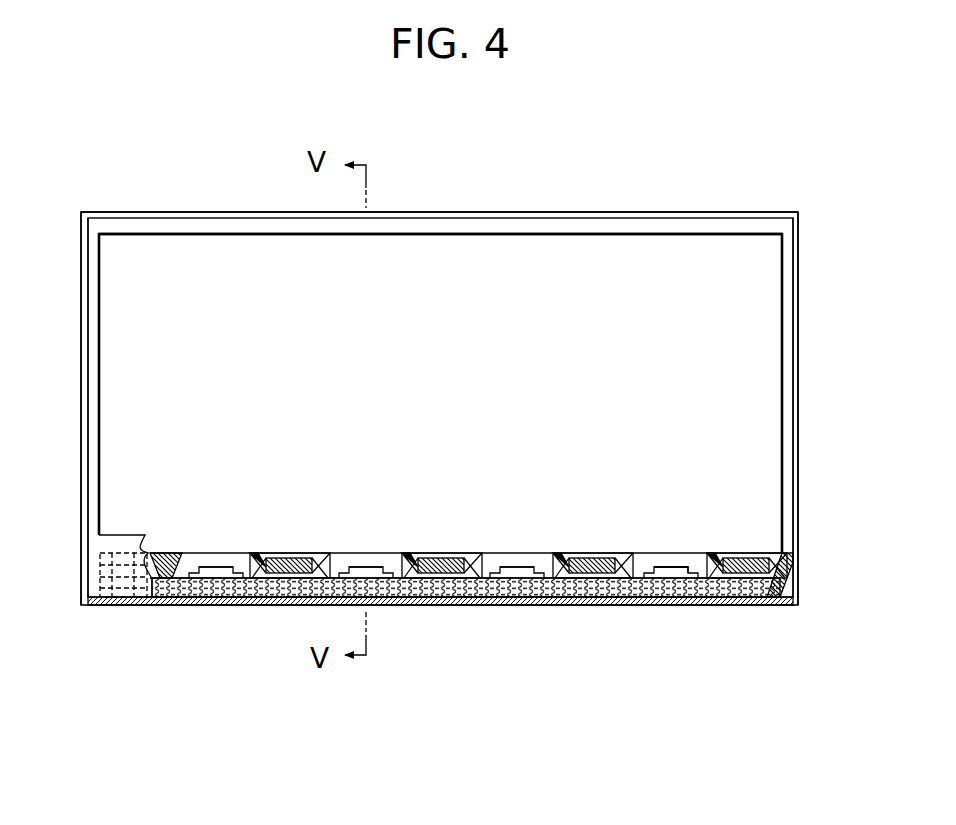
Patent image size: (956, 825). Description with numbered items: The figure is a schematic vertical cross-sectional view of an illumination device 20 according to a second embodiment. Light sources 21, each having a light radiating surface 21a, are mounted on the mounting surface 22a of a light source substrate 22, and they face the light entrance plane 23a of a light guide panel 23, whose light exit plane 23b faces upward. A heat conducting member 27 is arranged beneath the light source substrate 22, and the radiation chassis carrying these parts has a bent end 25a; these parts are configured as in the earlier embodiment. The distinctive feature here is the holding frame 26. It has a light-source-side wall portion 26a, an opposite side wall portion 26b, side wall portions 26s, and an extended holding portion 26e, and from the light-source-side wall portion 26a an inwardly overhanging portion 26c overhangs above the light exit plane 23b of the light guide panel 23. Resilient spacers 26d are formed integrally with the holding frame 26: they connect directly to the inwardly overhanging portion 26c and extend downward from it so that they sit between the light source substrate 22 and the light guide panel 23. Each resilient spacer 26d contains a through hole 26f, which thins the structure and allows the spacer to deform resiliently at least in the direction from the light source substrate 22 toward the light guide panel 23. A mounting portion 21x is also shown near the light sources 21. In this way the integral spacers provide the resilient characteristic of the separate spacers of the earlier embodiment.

The illumination device 20 is at (284, 120).
The light source 21 is at (205, 600).
The light radiating surface 21a is at (517, 566).
The mounting portion 21x is at (651, 567).
The light source substrate 22 is at (552, 603).
The mounting surface 22a is at (285, 553).
The light guide panel 23 is at (440, 351).
The light entrance plane 23a is at (229, 556).
The light exit plane 23b is at (193, 280).
The bent end 25a is at (758, 603).
The holding frame 26 is at (664, 206).
The light-source-side wall portion 26a is at (786, 603).
The opposite side wall portion 26b is at (498, 212).
The inwardly overhanging portion 26c is at (140, 535).
The resilient spacer 26d is at (405, 553).
The extended holding portion 26e is at (84, 418).
The through hole 26f is at (745, 555).
The side wall portion 26s is at (91, 352).
The heat conducting member 27 is at (718, 603).